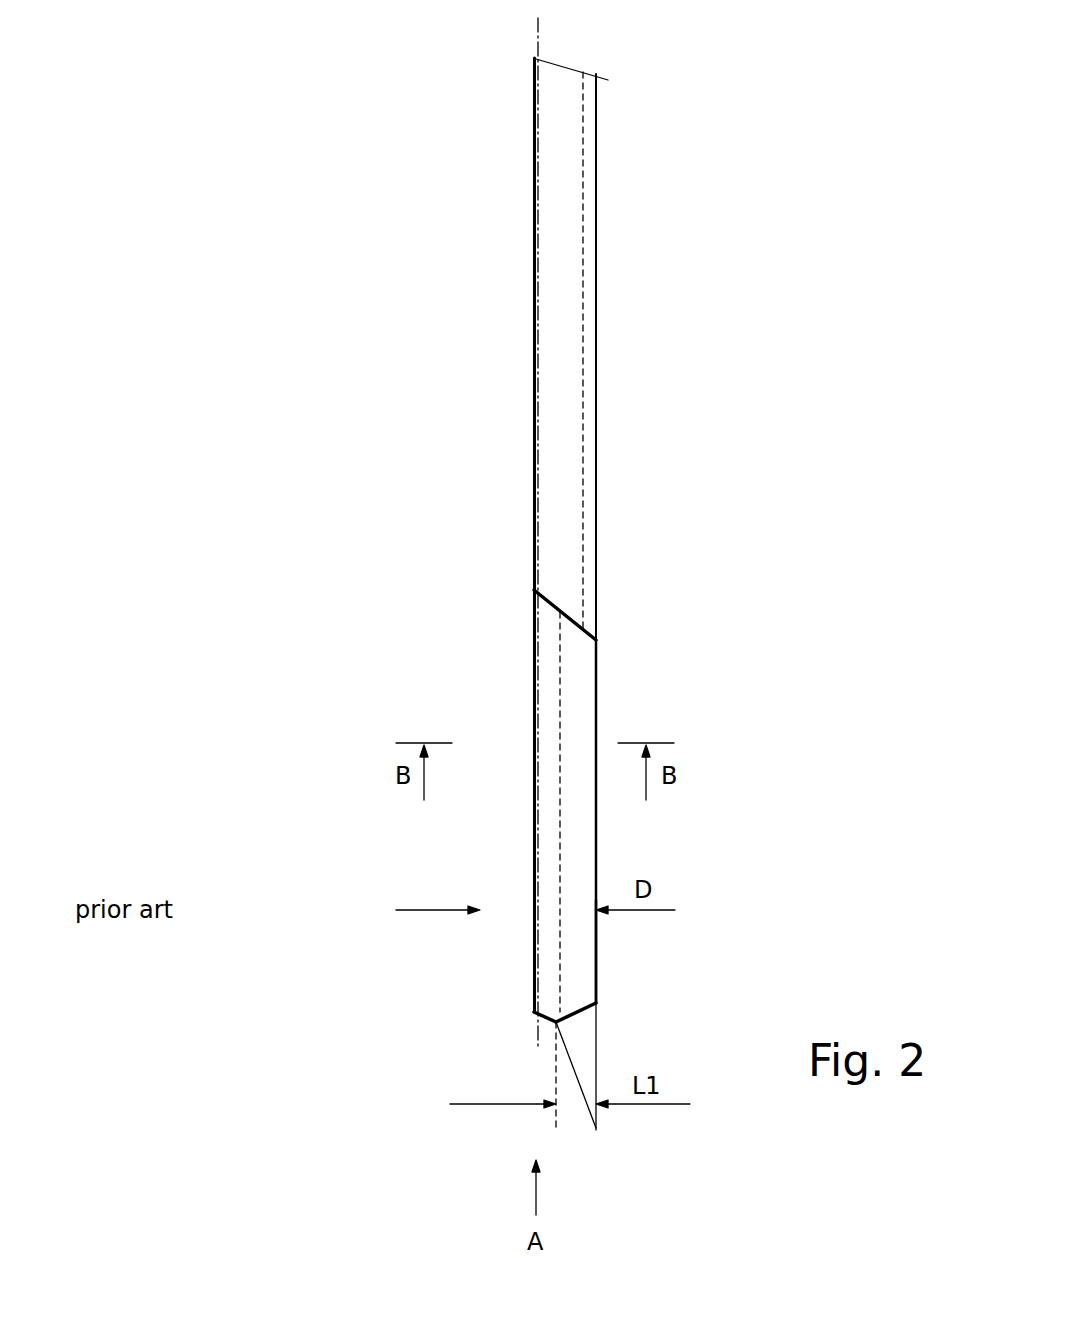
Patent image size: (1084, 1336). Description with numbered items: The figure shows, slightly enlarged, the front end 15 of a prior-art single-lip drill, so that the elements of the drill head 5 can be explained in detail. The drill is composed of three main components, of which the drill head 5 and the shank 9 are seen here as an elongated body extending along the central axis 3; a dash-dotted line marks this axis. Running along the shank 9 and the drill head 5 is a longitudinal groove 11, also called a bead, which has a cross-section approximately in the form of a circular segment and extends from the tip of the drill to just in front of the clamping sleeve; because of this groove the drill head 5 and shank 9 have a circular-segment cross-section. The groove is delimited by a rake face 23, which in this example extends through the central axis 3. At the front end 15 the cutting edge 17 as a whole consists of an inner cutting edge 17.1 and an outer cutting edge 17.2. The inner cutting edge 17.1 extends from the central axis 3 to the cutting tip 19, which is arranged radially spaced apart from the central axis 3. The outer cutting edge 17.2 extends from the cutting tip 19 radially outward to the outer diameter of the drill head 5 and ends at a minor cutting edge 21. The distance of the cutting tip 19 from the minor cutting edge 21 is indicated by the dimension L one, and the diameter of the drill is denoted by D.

The central axis 3 is at (538, 48).
The drill head 5 is at (703, 652).
The shank 9 is at (703, 292).
The longitudinal groove 11 is at (564, 450).
The front end 15 is at (456, 1138).
The cutting edge 17 is at (527, 993).
The inner cutting edge 17.1 is at (537, 1025).
The outer cutting edge 17.2 is at (596, 1003).
The cutting tip 19 is at (596, 1128).
The minor cutting edge 21 is at (596, 956).
The rake face 23 is at (584, 863).